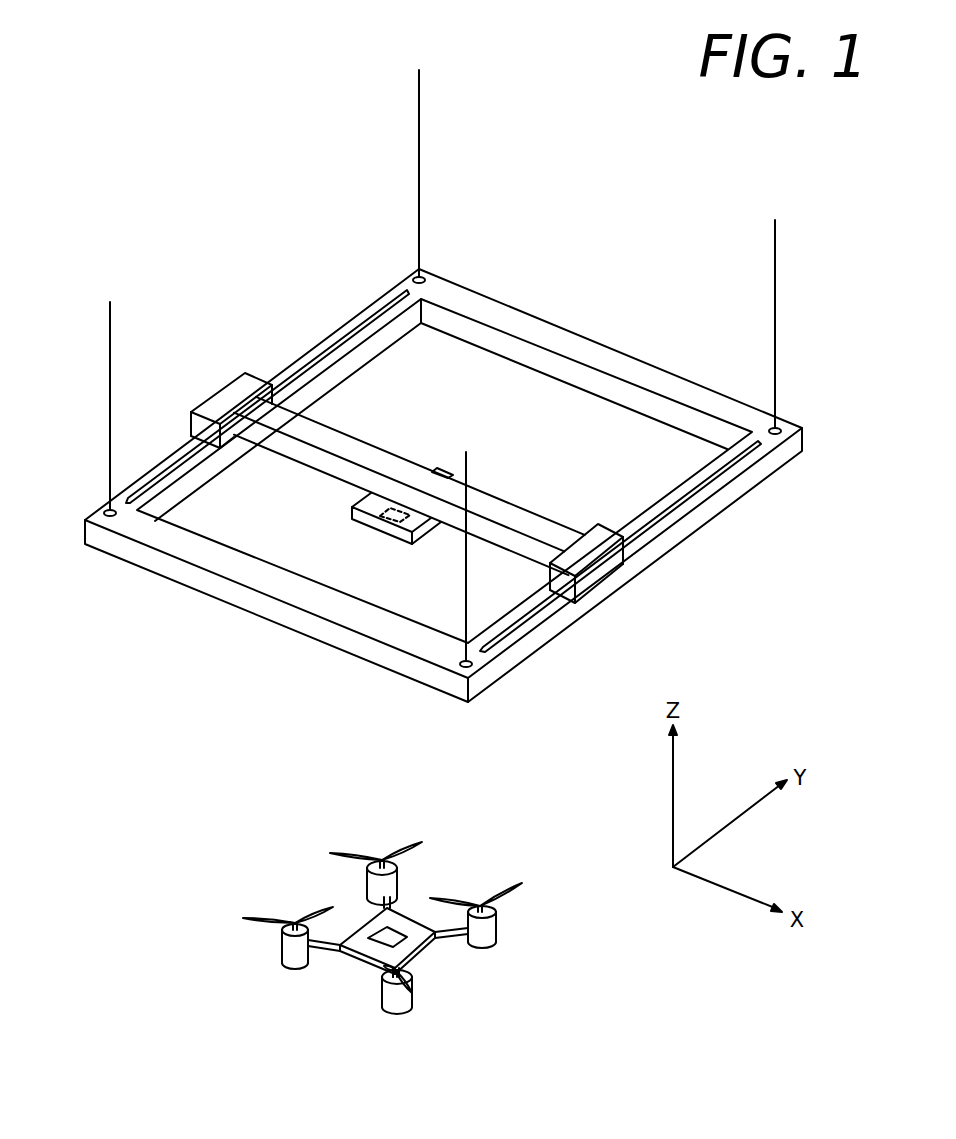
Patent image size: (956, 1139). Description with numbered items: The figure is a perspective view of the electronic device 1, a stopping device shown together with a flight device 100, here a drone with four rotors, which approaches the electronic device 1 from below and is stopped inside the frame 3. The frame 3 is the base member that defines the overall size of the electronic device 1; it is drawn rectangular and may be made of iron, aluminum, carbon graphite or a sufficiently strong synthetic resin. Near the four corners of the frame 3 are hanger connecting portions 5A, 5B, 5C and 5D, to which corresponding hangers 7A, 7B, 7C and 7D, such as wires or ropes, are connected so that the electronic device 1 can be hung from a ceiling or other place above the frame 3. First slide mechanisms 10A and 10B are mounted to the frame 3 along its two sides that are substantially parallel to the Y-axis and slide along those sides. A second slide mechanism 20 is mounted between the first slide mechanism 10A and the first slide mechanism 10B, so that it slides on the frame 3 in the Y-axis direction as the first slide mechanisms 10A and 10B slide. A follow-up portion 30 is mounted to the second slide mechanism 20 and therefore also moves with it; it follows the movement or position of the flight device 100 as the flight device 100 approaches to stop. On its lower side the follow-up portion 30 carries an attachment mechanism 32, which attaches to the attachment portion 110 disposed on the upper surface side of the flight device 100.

The electronic device 1 is at (216, 207).
The frame 3 is at (598, 342).
The hanger connecting portion 5A is at (462, 668).
The hanger connecting portion 5B is at (105, 512).
The hanger connecting portion 5C is at (414, 278).
The hanger connecting portion 5D is at (789, 430).
The hanger 7A is at (466, 462).
The hanger 7B is at (110, 372).
The hanger 7C is at (419, 141).
The hanger 7D is at (775, 272).
The first slide mechanism 10A is at (605, 572).
The first slide mechanism 10B is at (228, 392).
The second slide mechanism 20 is at (345, 438).
The follow-up portion 30 is at (403, 535).
The attachment mechanism 32 is at (380, 516).
The flight device 100 is at (452, 996).
The attachment portion 110 is at (382, 933).